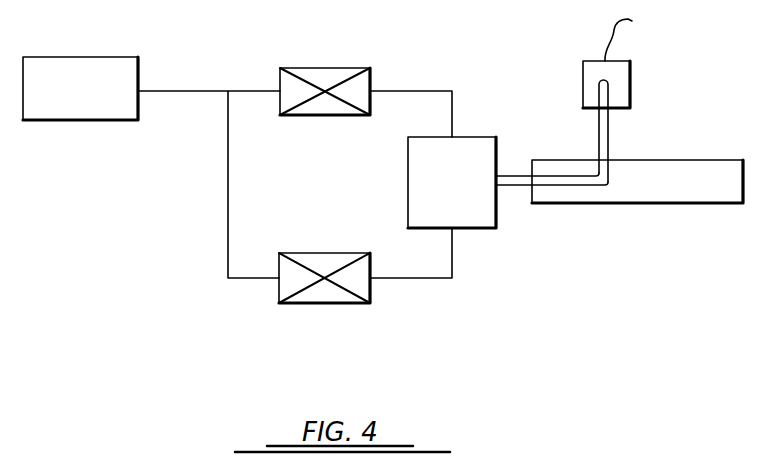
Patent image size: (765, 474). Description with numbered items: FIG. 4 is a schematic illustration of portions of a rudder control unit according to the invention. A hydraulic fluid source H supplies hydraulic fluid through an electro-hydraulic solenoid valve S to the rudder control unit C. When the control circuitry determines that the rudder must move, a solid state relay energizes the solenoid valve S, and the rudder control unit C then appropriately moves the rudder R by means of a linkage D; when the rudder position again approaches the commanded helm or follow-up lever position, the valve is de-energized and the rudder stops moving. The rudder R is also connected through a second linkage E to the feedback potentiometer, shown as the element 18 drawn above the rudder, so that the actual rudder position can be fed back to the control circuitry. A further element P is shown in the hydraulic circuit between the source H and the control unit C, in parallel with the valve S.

The heater / hot water source H is at (100, 122).
The solenoid valve S is at (347, 118).
The pump P is at (326, 305).
The control unit C is at (468, 137).
The delivery tube D is at (515, 187).
The riser tube E is at (608, 137).
The reservoir R is at (662, 204).
The sensor housing 18 is at (630, 70).